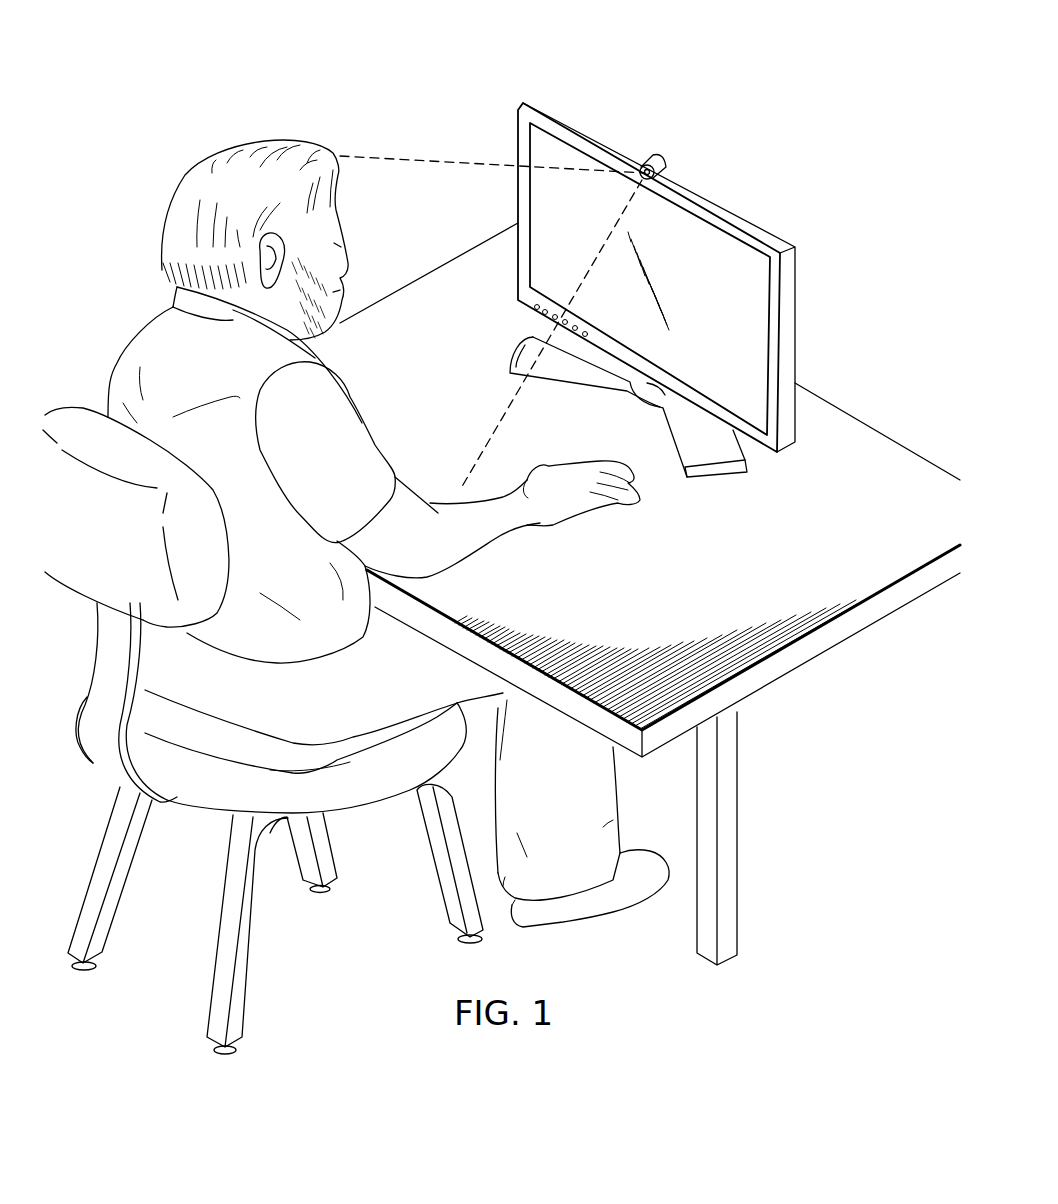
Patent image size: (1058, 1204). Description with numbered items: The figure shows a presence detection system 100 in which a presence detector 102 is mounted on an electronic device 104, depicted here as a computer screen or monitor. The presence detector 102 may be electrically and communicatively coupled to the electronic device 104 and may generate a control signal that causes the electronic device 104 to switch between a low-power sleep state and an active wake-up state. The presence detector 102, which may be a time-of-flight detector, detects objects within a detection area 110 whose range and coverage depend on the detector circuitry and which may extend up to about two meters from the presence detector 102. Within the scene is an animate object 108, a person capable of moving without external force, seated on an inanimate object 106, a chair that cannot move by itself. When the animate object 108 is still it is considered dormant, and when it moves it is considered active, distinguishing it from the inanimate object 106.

The presence detection system 100 is at (795, 68).
The presence detector 102 is at (660, 158).
The electronic device 104 is at (797, 313).
The inanimate object 106 is at (80, 405).
The animate object 108 is at (228, 150).
The detection area 110 is at (427, 160).